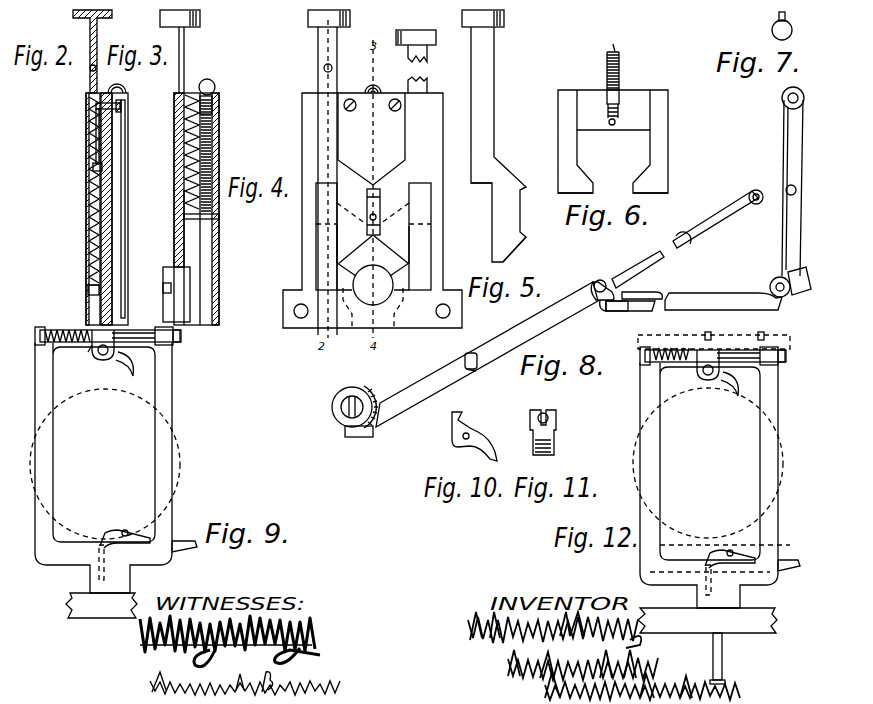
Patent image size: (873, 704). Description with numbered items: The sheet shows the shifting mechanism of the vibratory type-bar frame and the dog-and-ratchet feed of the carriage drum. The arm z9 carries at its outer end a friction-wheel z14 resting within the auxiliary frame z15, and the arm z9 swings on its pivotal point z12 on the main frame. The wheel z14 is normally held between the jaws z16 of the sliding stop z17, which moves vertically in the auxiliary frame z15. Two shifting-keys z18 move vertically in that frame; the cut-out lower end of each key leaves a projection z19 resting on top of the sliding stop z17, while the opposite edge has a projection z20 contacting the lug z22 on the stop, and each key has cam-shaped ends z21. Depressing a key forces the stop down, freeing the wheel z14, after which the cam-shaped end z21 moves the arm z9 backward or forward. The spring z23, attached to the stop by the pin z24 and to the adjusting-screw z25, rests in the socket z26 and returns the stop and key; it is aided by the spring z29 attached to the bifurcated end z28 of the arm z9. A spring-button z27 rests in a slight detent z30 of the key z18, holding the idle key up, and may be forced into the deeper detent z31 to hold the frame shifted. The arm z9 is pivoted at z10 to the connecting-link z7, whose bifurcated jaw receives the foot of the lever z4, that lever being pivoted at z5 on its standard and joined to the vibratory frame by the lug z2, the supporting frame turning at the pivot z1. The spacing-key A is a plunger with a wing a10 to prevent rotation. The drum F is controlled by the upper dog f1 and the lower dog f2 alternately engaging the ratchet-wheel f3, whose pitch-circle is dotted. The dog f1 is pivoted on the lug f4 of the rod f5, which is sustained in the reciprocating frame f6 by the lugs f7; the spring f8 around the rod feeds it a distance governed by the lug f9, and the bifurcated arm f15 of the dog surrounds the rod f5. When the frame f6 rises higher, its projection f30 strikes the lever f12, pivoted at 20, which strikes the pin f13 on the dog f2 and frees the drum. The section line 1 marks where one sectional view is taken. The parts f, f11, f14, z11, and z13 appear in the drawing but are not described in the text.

In FIG. 2, the shifting-keys z18 is at (96, 45).
In FIG. 3, the shifting-keys z18 is at (185, 42).
In FIG. 4, the shifting-keys z18 is at (340, 46).
In FIG. 5, the shifting-keys z18 is at (492, 80).
In FIG. 2, the auxiliary frame z15 is at (128, 184).
In FIG. 3, the auxiliary frame z15 is at (219, 152).
In FIG. 4, the auxiliary frame z15 is at (302, 133).
In FIG. 2, the detent z31 is at (90, 69).
In FIG. 4, the detent z31 is at (325, 70).
In FIG. 2, the adjusting-screw z25 is at (120, 86).
In FIG. 4, the adjusting-screw z25 is at (378, 86).
In FIG. 2, the spring-button z27 is at (122, 105).
In FIG. 2, the detent z30 is at (95, 110).
In FIG. 2, the socket z26 is at (126, 137).
In FIG. 3, the socket z26 is at (212, 106).
In FIG. 2, the sliding stop z17 is at (90, 208).
In FIG. 3, the sliding stop z17 is at (184, 208).
In FIG. 4, the sliding stop z17 is at (338, 205).
In FIG. 6, the sliding stop z17 is at (668, 108).
In FIG. 2, the jaws z16 is at (90, 232).
In FIG. 4, the jaws z16 is at (338, 285).
In FIG. 6, the jaws z16 is at (580, 188).
In FIG. 3, the lugs z2 is at (212, 81).
In FIG. 3, the spring z23 is at (212, 128).
In FIG. 6, the spring z23 is at (607, 66).
In FIG. 3, the lug z22 is at (184, 198).
In FIG. 4, the lug z22 is at (380, 192).
In FIG. 6, the lug z22 is at (619, 92).
In FIG. 3, the pin z24 is at (219, 217).
In FIG. 4, the pin z24 is at (377, 218).
In FIG. 6, the pin z24 is at (615, 121).
In FIG. 3, the friction-wheel z14 is at (176, 267).
In FIG. 8, the friction-wheel z14 is at (352, 387).
In FIG. 3, the arm z9 is at (164, 292).
In FIG. 8, the arm z9 is at (545, 325).
In FIG. 4, the cam-shaped ends z21 is at (363, 242).
In FIG. 5, the cam-shaped ends z21 is at (518, 250).
In FIG. 4, the projection z19 is at (373, 270).
In FIG. 5, the projection z19 is at (485, 185).
In FIG. 5, the projection z20 is at (526, 190).
In FIG. 7, the spacing-key A is at (792, 32).
In FIG. 7, the wing a10 is at (786, 14).
In FIG. 7, the pivot z1 is at (793, 181).
In FIG. 7, the lever z4 is at (795, 188).
In FIG. 7, the pivot z5 is at (810, 290).
In FIG. 7, the connecting-link z7 is at (723, 301).
In FIG. 8, the thumb screw z13 is at (470, 352).
In FIG. 8, the pivotal point z12 is at (478, 367).
In FIG. 8, the pivot z10 is at (600, 278).
In FIG. 8, the bifurcated end z28 is at (626, 270).
In FIG. 8, the hinge z11 is at (631, 301).
In FIG. 8, the spring z29 is at (703, 224).
In FIG. 9, the section line 1 is at (116, 336).
In FIG. 12, the section line 1 is at (719, 348).
In FIG. 9, the spring f8 is at (64, 330).
In FIG. 12, the spring f8 is at (667, 348).
In FIG. 9, the rod f5 is at (150, 330).
In FIG. 11, the rod f5 is at (544, 412).
In FIG. 12, the rod f5 is at (740, 348).
In FIG. 9, the frame f6 is at (173, 420).
In FIG. 12, the frame f6 is at (779, 440).
In FIG. 9, the drum F is at (105, 464).
In FIG. 12, the drum F is at (708, 463).
In FIG. 9, the ratchet-wheel f3 is at (97, 392).
In FIG. 12, the ratchet-wheel f3 is at (718, 392).
In FIG. 9, the lug f4 is at (103, 345).
In FIG. 12, the lug f4 is at (708, 365).
In FIG. 9, the bifurcated arm f15 is at (90, 350).
In FIG. 10, the bifurcated arm f15 is at (464, 418).
In FIG. 11, the bifurcated arm f15 is at (556, 408).
In FIG. 12, the bifurcated arm f15 is at (696, 370).
In FIG. 9, the hook f11 is at (122, 360).
In FIG. 12, the hook f11 is at (727, 380).
In FIG. 9, the lugs f7 is at (38, 346).
In FIG. 12, the lugs f7 is at (642, 366).
In FIG. 9, the lug f9 is at (156, 350).
In FIG. 12, the lug f9 is at (762, 370).
In FIG. 9, the lever f12 is at (120, 530).
In FIG. 12, the lever f12 is at (725, 550).
In FIG. 9, the pivot 20 is at (133, 530).
In FIG. 12, the pivot 20 is at (738, 550).
In FIG. 9, the projection f30 is at (185, 550).
In FIG. 12, the projection f30 is at (790, 570).
In FIG. 9, the bar f14 is at (98, 566).
In FIG. 9, the pin f13 is at (108, 565).
In FIG. 12, the pin f13 is at (714, 578).
In FIG. 10, the dog f1 is at (474, 438).
In FIG. 11, the fork f is at (548, 432).
In FIG. 12, the dog f2 is at (737, 330).